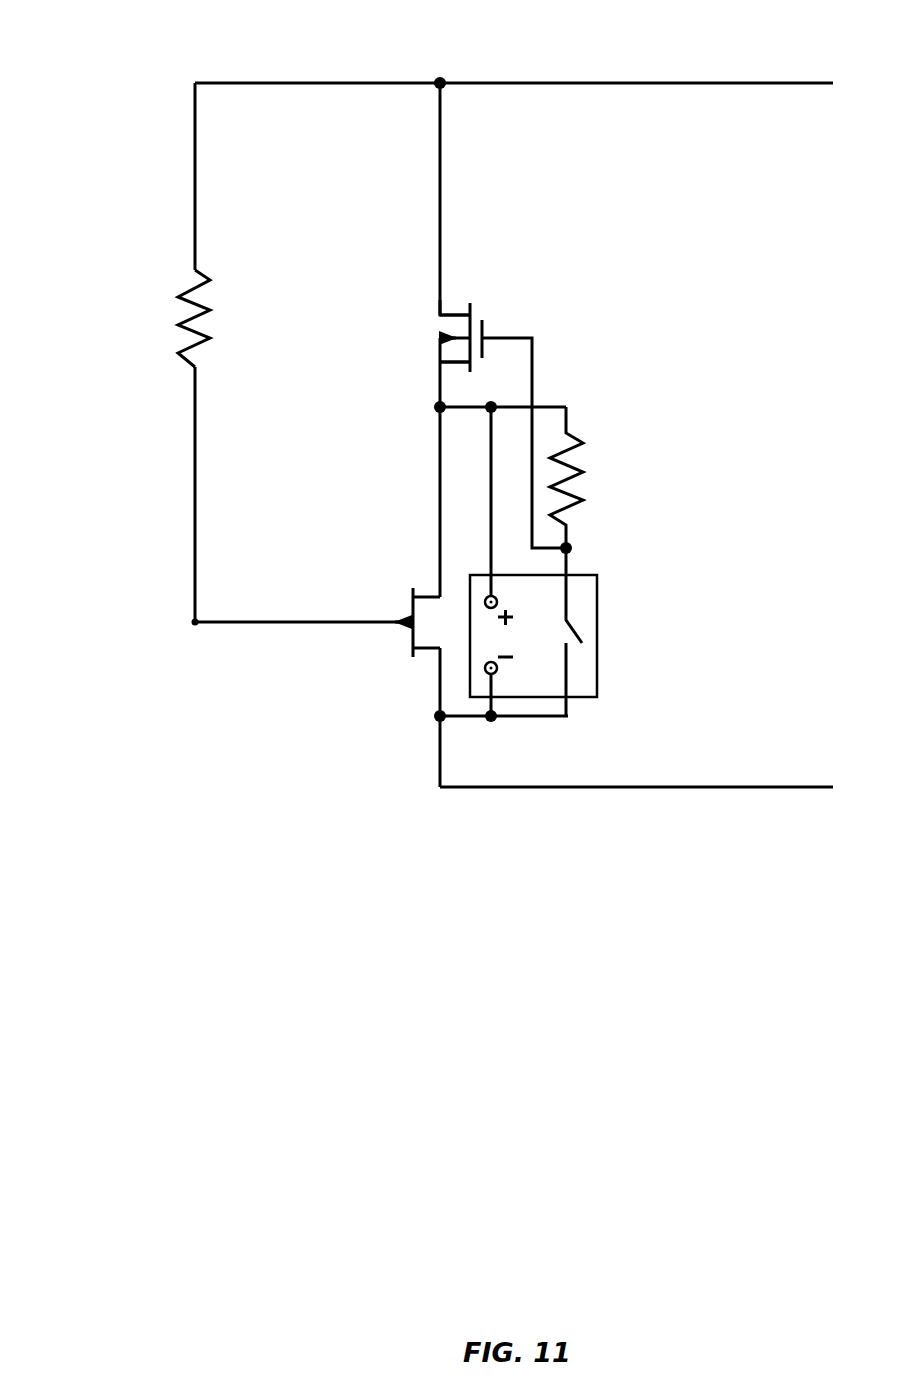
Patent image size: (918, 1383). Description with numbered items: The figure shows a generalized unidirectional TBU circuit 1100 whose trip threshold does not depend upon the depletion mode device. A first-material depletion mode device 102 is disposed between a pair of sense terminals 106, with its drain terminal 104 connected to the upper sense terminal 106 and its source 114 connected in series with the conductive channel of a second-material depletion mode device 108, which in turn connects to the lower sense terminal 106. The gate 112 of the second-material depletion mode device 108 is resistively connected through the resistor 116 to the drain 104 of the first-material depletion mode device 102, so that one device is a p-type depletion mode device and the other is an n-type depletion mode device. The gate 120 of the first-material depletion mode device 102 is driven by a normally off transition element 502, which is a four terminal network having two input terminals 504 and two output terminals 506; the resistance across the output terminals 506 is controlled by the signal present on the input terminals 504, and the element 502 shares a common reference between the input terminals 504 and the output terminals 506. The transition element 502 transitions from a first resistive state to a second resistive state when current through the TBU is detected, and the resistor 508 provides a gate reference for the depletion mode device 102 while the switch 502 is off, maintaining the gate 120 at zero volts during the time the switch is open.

The generalized unidirectional TBU circuit 1100 is at (112, 66).
The sense terminal 106 is at (533, 80).
The drain terminal 104 is at (450, 315).
The first-material depletion mode device 102 is at (510, 296).
The gate 120 is at (502, 340).
The source 114 is at (452, 362).
The resistive connection 116 is at (210, 308).
The second-material depletion mode device 108 is at (386, 572).
The gate 112 is at (392, 626).
The input terminals 504 is at (570, 563).
The normally off transition element 502 is at (598, 650).
The output terminals 506 is at (487, 713).
The resistor 508 is at (582, 497).